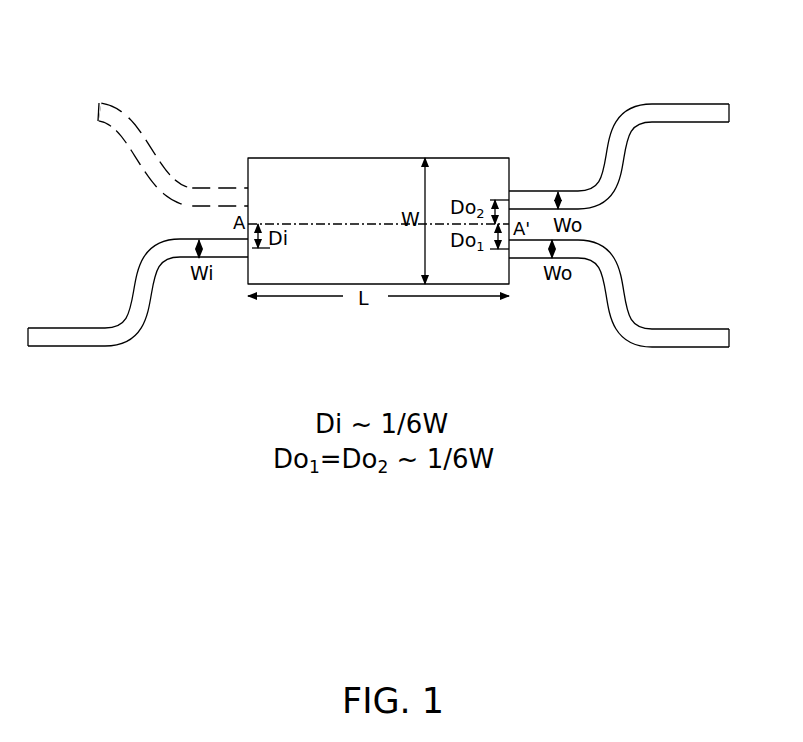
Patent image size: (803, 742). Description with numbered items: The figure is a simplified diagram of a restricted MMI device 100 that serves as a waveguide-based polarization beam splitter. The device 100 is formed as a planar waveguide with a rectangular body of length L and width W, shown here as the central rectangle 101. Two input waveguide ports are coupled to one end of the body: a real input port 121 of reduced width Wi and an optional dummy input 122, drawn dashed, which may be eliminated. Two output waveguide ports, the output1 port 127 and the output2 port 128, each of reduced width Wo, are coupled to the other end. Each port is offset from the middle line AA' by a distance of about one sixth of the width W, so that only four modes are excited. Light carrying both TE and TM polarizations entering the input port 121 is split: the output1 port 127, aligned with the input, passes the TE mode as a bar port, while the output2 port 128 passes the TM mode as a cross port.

The restricted MMI device 100 is at (287, 60).
The multimode interference body 101 is at (385, 158).
The input port 121 is at (55, 327).
The dummy input 122 is at (150, 162).
The output1 port 127 is at (693, 329).
The output2 port 128 is at (687, 105).